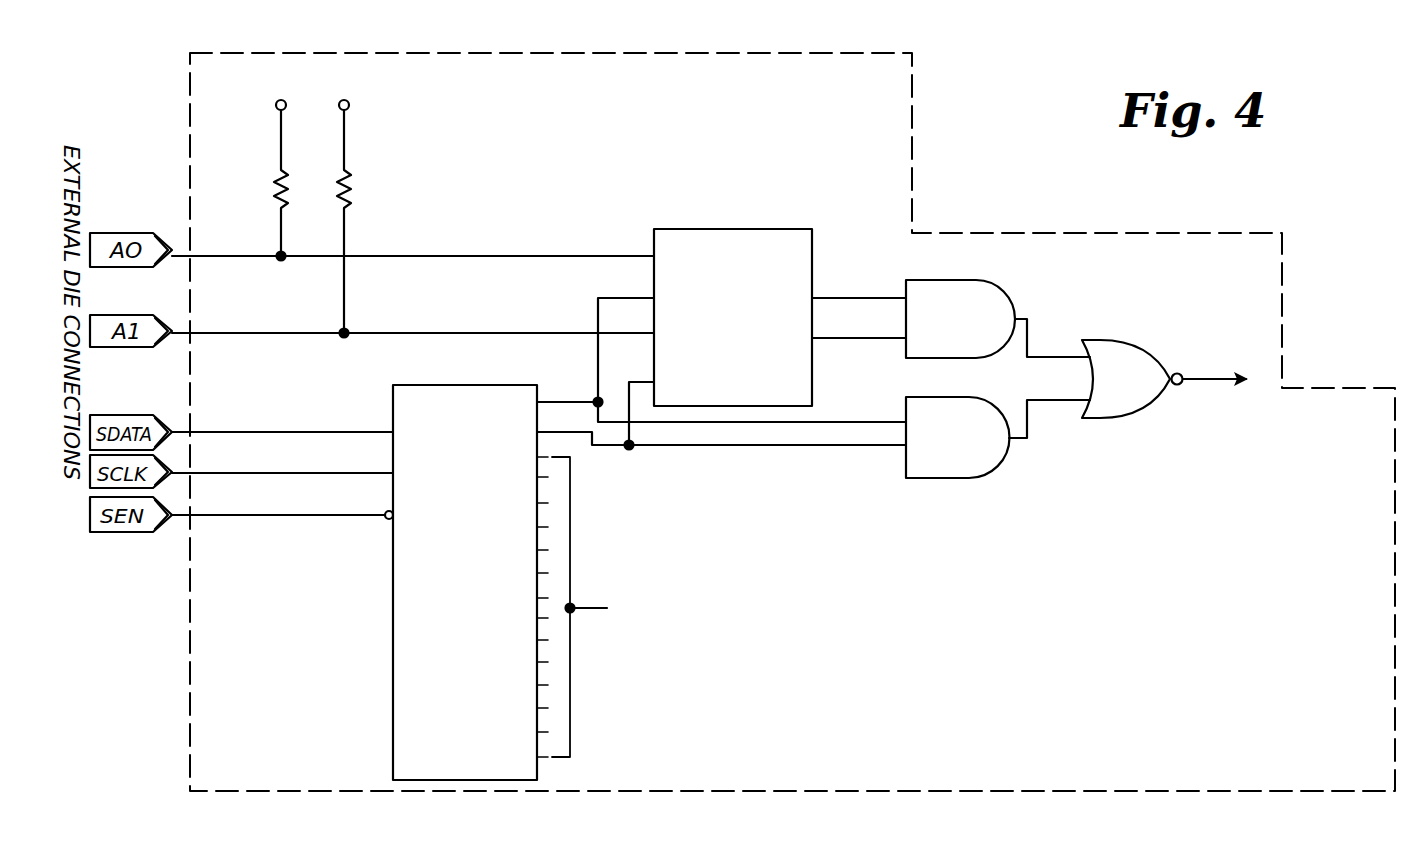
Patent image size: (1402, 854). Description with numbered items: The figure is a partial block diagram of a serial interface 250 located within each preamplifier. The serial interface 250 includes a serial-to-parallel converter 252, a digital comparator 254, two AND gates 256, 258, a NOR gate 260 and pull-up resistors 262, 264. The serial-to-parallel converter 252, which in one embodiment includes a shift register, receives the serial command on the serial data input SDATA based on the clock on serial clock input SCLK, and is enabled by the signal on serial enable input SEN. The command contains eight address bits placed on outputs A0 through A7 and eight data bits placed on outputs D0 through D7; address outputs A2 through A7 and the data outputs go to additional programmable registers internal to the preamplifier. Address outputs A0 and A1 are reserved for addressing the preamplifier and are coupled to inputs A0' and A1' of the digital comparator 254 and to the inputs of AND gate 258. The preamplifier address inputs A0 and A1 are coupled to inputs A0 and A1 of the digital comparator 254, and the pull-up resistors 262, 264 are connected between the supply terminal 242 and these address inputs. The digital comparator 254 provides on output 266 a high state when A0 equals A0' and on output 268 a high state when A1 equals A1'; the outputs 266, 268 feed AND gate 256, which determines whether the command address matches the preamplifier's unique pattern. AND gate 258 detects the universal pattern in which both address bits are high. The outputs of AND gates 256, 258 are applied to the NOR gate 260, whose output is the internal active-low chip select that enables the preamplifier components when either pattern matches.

The serial interface 250 is at (925, 120).
The supply terminal 242 is at (275, 104).
The pull-up resistor 262 is at (274, 187).
The pull-up resistor 264 is at (350, 189).
The serial-to-parallel converter 252 is at (393, 586).
The digital comparator 254 is at (692, 229).
The output 266 is at (826, 296).
The output 268 is at (826, 340).
The AND gate 256 is at (1004, 292).
The AND gate 258 is at (940, 478).
The NOR gate 260 is at (1125, 342).